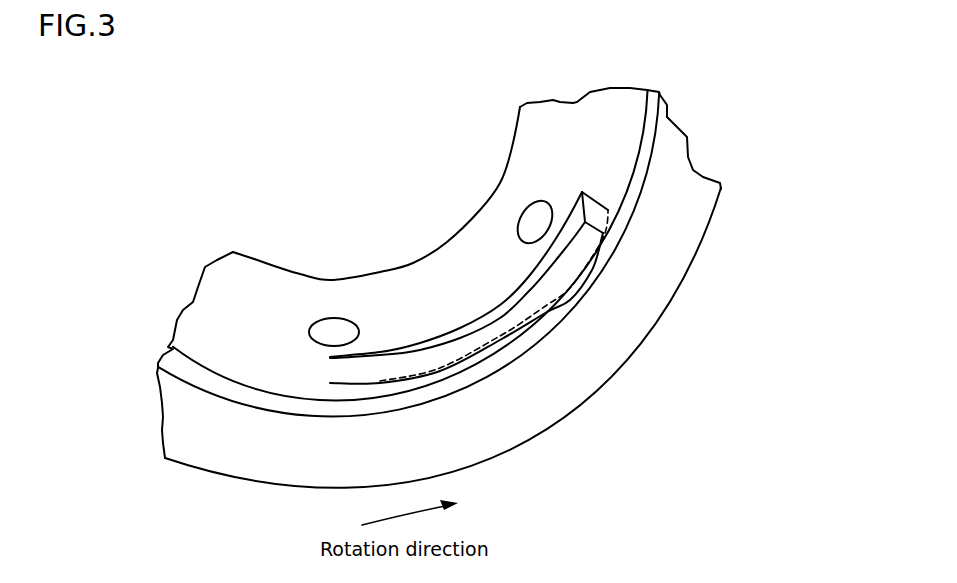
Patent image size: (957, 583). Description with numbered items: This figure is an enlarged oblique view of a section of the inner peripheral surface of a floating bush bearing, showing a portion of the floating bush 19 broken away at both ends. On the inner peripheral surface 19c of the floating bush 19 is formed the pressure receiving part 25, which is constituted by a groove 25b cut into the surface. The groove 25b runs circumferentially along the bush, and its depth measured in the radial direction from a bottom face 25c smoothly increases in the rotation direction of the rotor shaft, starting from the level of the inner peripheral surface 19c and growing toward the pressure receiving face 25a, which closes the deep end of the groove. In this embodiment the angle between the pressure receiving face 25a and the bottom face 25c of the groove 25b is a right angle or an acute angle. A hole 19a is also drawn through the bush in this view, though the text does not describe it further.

The floating bush 19 is at (705, 144).
The through hole 19a is at (330, 333).
The inner peripheral surface 19c is at (583, 113).
The pressure receiving part 25 is at (420, 292).
The pressure receiving face 25a is at (592, 207).
The groove 25b is at (495, 330).
The bottom face 25c is at (600, 275).